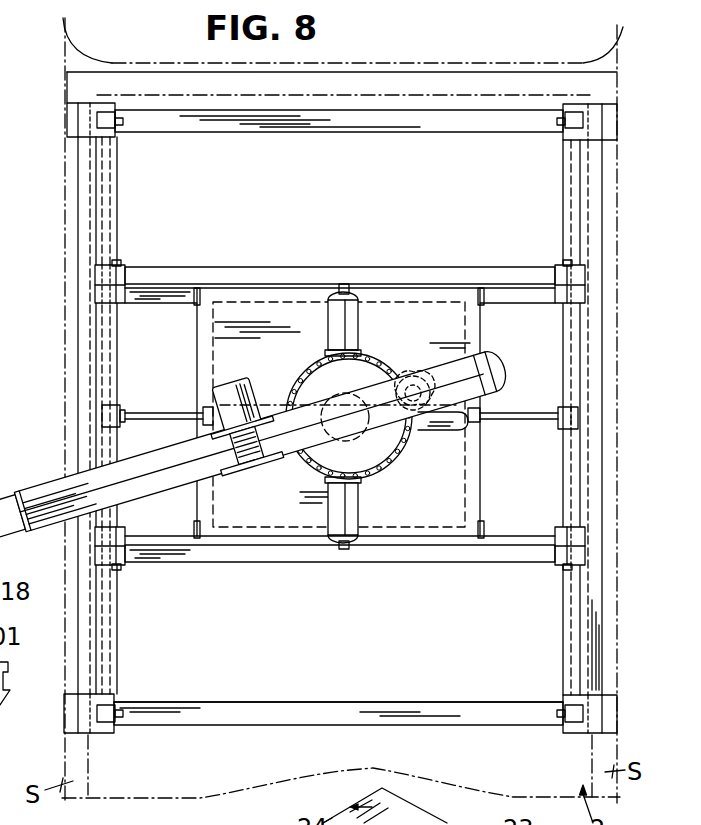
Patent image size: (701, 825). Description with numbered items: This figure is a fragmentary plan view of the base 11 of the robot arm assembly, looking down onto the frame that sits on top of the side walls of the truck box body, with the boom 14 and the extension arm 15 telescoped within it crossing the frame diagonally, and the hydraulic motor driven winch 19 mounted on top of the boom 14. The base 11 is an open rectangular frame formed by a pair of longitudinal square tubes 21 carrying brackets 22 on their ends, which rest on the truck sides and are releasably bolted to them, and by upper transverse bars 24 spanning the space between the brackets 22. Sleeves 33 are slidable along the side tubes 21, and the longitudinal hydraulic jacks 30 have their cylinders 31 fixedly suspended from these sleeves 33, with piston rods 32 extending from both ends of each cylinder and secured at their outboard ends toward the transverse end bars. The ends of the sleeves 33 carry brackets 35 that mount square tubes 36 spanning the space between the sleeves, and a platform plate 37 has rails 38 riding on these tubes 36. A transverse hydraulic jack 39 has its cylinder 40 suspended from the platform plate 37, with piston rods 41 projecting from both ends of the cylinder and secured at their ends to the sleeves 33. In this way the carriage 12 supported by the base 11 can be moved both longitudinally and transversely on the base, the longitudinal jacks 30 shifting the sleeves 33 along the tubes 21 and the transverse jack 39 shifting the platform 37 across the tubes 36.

The base 11 is at (329, 698).
The carriage 12 is at (486, 488).
The boom 14 is at (42, 482).
The extension arm 15 is at (3, 492).
The hydraulic motor driven winch 19 is at (257, 457).
The square tubes 21 is at (85, 190).
The brackets 22 is at (70, 115).
The upper transverse bars 24 is at (330, 131).
The longitudinal hydraulic jacks 30 is at (338, 416).
The cylinders 31 is at (113, 373).
The piston rods 32 is at (110, 198).
The sleeves 33 is at (95, 307).
The brackets 35 is at (125, 265).
The square tubes 36 is at (287, 273).
The platform plate 37 is at (281, 378).
The rails 38 is at (490, 287).
The transverse hydraulic jack 39 is at (437, 442).
The cylinder 40 is at (420, 432).
The piston rods 41 is at (155, 415).